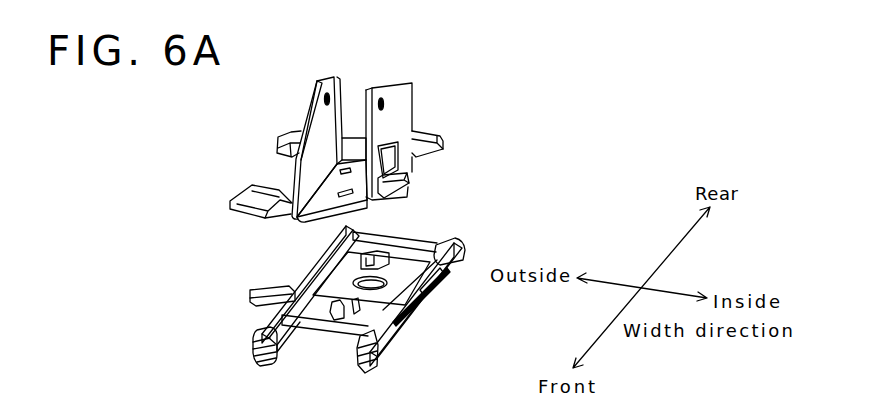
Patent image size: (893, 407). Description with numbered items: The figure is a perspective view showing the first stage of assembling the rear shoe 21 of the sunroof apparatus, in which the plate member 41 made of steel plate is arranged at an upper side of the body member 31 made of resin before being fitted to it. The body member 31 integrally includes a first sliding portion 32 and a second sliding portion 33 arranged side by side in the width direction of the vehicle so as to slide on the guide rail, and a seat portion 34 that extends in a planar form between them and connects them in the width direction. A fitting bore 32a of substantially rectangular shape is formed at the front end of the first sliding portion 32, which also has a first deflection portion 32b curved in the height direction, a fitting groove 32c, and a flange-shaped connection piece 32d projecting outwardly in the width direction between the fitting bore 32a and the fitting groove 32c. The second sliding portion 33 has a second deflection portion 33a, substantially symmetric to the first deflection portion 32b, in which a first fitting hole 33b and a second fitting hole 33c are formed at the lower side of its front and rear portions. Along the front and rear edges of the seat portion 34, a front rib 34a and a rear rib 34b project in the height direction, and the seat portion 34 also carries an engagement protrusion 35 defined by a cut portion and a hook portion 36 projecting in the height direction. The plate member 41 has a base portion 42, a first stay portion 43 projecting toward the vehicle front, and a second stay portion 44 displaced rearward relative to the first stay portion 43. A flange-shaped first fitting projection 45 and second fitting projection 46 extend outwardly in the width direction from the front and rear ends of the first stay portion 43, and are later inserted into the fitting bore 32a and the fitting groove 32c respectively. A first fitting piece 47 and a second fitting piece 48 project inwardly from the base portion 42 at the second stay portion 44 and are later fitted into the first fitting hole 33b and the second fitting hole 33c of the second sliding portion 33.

The rear shoe 21 is at (137, 190).
The body member 31 is at (196, 233).
The first sliding portion 32 is at (257, 368).
The fitting bore 32a is at (293, 340).
The first deflection portion 32b is at (322, 256).
The fitting groove 32c is at (306, 270).
The connection piece 32d is at (250, 293).
The second sliding portion 33 is at (364, 377).
The second deflection portion 33a is at (430, 293).
The first fitting hole 33b is at (415, 325).
The second fitting hole 33c is at (440, 275).
The seat portion 34 is at (413, 258).
The front rib 34a is at (318, 322).
The rear rib 34b is at (374, 253).
The engagement protrusion 35 is at (336, 340).
The hook portion 36 is at (385, 258).
The plate member 41 is at (197, 191).
The base portion 42 is at (357, 148).
The first stay portion 43 is at (318, 123).
The second stay portion 44 is at (407, 98).
The first fitting projection 45 is at (243, 193).
The second fitting projection 46 is at (290, 139).
The first fitting piece 47 is at (404, 185).
The second fitting piece 48 is at (428, 139).